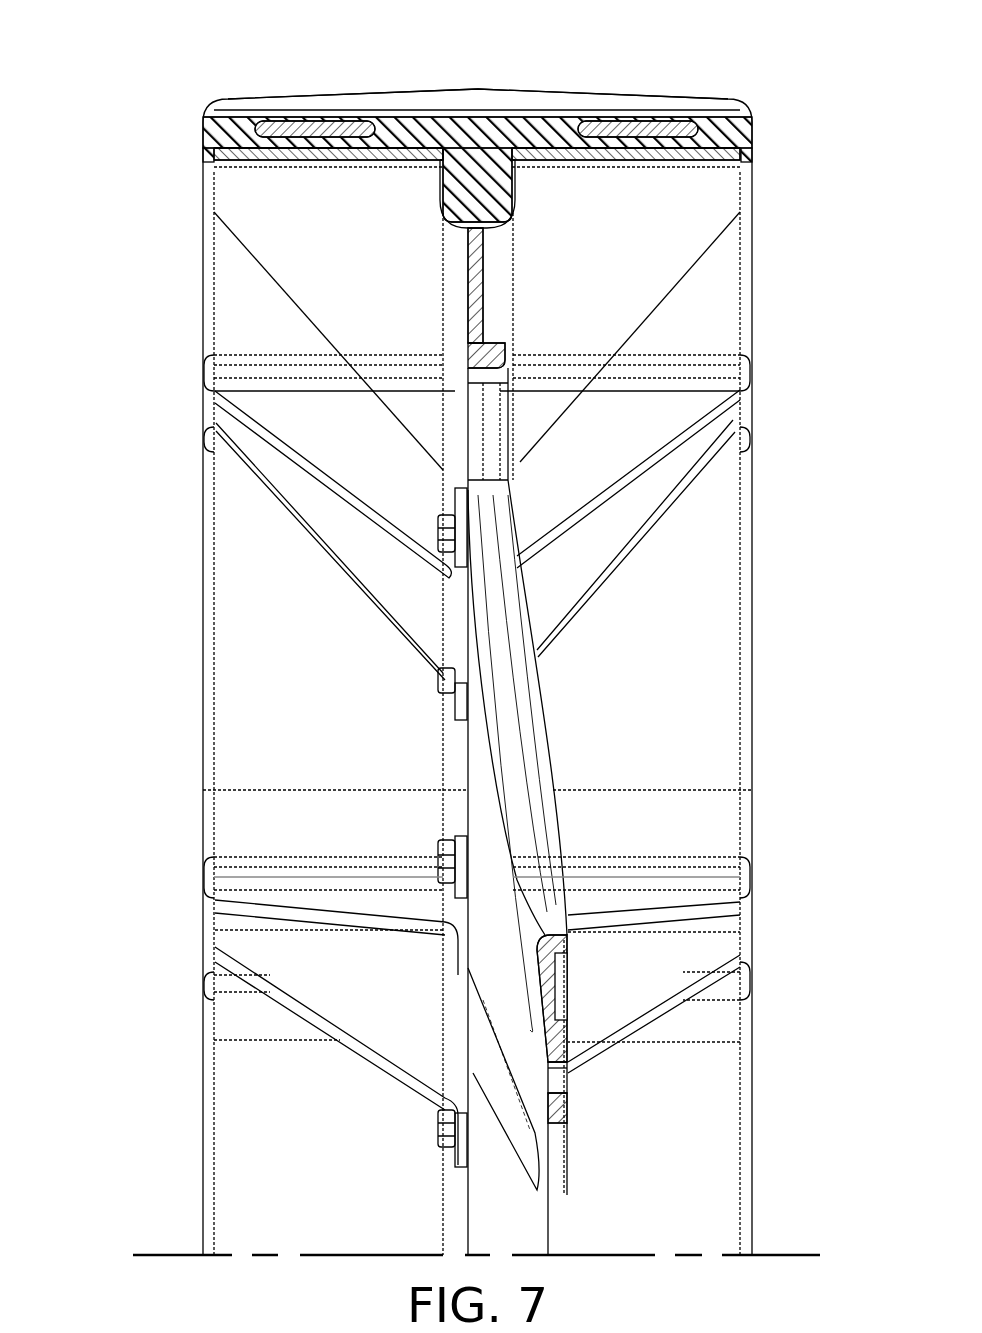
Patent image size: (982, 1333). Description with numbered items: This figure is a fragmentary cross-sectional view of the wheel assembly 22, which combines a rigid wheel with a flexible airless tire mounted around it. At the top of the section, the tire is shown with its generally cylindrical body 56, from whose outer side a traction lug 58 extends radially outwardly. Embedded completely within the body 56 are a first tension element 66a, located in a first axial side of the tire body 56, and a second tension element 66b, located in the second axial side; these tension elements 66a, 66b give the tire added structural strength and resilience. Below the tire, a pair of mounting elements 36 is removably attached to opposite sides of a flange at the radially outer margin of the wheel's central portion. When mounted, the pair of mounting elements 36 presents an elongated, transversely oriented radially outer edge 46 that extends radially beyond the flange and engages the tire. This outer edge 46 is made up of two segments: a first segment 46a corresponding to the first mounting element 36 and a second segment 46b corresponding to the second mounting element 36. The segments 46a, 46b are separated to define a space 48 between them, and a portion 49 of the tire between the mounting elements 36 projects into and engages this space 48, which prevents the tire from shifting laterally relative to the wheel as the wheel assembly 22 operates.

The wheel assembly 22 is at (80, 97).
The mounting element 36 is at (277, 217).
The radially outer edge 46 is at (192, 148).
The first segment 46a is at (258, 160).
The second segment 46b is at (687, 160).
The space 48 is at (482, 165).
The portion of the tire 49 is at (482, 181).
The body 56 is at (762, 115).
The traction lug 58 is at (416, 100).
The first tension element 66a is at (278, 132).
The second tension element 66b is at (654, 132).